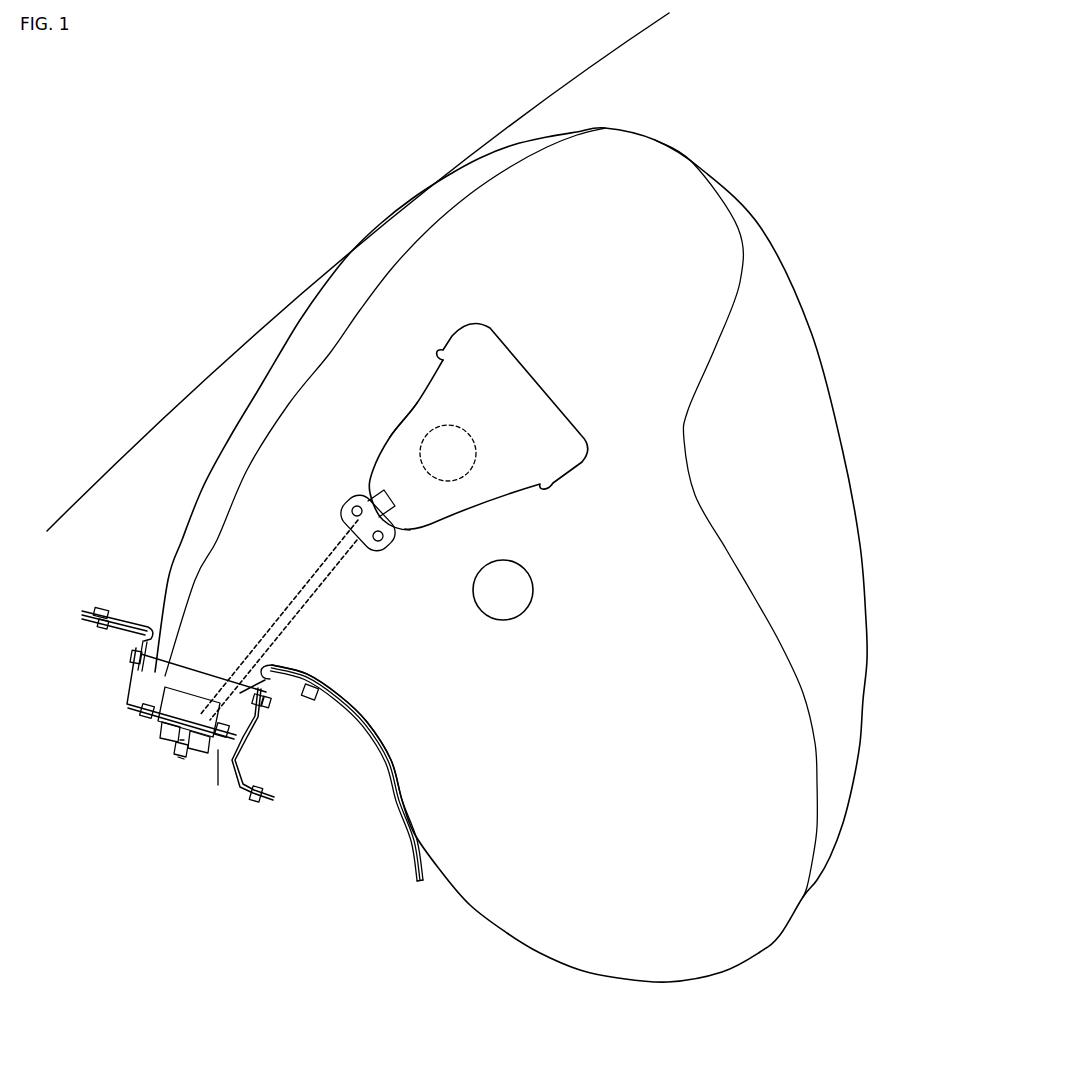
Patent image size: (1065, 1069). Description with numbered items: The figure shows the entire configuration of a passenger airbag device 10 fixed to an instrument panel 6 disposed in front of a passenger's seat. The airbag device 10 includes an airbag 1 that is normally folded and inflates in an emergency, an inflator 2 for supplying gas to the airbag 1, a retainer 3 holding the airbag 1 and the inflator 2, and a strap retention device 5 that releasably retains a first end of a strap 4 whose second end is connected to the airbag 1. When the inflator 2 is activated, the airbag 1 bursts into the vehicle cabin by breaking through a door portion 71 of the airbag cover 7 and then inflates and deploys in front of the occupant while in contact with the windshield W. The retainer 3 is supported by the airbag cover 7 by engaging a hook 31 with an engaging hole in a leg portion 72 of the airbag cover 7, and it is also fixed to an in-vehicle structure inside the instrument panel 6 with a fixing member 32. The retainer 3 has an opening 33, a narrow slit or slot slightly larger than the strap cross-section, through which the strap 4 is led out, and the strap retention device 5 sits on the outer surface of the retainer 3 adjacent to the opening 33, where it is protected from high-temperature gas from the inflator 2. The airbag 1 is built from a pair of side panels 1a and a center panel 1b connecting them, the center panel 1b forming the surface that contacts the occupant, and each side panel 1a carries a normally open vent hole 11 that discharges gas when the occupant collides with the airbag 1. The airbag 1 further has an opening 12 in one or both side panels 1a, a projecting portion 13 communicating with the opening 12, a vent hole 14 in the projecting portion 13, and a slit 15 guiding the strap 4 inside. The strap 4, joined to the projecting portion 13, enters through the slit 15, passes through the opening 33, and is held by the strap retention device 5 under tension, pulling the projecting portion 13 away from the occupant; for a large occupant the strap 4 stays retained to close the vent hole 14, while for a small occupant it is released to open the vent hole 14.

The airbag 1 is at (862, 541).
The side panel 1a is at (668, 887).
The center panel 1b is at (795, 500).
The airbag device 10 is at (756, 134).
The normally open vent hole 11 is at (534, 588).
The opening 12 is at (537, 381).
The projecting portion 13 is at (413, 401).
The vent hole 14 is at (467, 478).
The slit 15 is at (344, 528).
The inflator 2 is at (160, 733).
The retainer 3 is at (128, 691).
The hook 31 is at (130, 655).
The fixing member 32 is at (237, 771).
The opening 33 is at (187, 730).
The strap 4 is at (323, 587).
The strap retention device 5 is at (164, 760).
The instrument panel 6 is at (378, 762).
The airbag cover 7 is at (115, 598).
The door portion 71 is at (134, 619).
The leg portion 72 is at (131, 668).
The windshield W is at (234, 348).